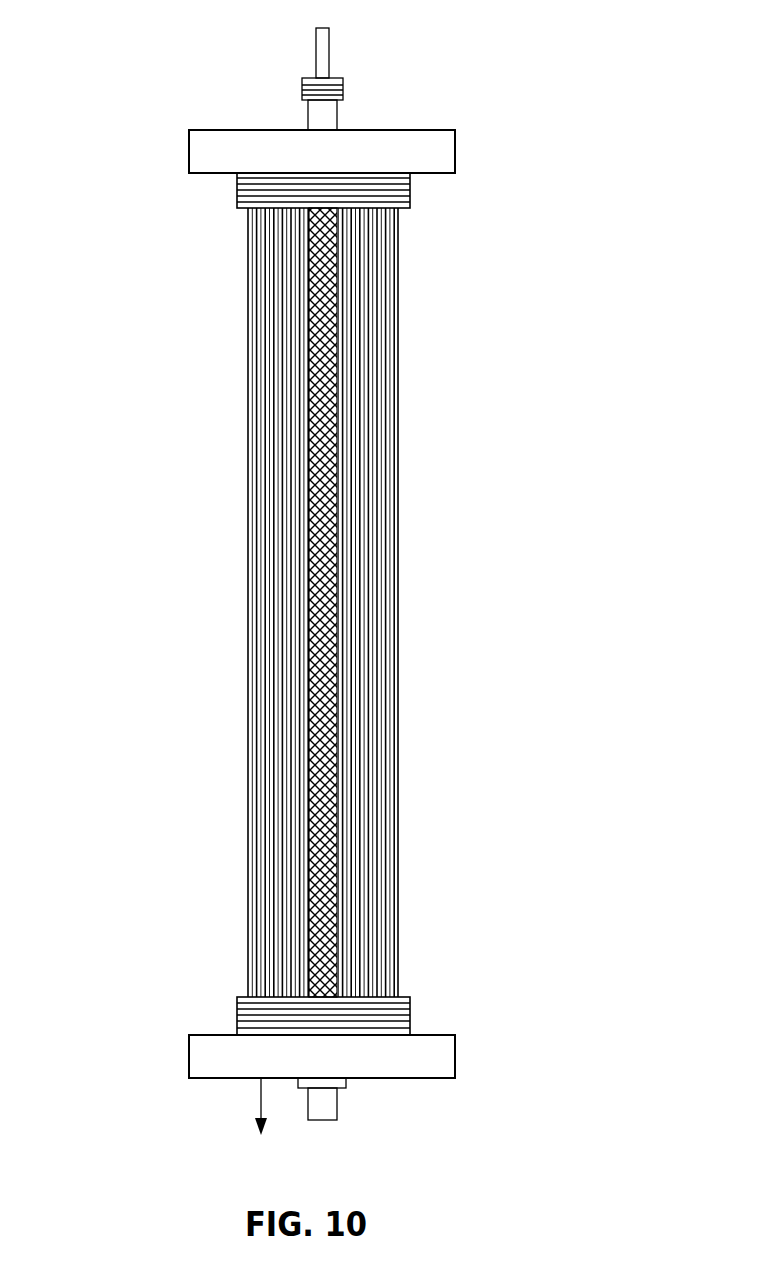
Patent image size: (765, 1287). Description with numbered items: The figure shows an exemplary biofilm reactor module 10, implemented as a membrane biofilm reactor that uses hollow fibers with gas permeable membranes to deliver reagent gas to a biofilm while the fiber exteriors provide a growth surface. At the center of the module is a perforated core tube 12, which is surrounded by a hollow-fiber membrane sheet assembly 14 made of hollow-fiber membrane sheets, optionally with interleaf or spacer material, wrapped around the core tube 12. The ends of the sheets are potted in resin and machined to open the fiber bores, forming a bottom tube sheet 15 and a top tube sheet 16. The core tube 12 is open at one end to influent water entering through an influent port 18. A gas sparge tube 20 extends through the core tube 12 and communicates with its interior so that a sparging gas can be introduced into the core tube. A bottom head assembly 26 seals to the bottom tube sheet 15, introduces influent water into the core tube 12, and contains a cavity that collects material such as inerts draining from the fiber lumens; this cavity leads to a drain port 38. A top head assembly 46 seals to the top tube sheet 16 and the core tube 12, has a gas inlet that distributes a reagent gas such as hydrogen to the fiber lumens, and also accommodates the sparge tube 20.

The biofilm reactor module 10 is at (486, 348).
The perforated core tube 12 is at (312, 645).
The hollow-fiber membrane sheet assembly 14 is at (266, 503).
The bottom tube sheet 15 is at (236, 1010).
The top tube sheet 16 is at (236, 194).
The influent port 18 is at (322, 1120).
The gas sparge tube 20 is at (329, 38).
The bottom head assembly 26 is at (456, 1043).
The drain port 38 is at (239, 1108).
The top head assembly 46 is at (456, 145).